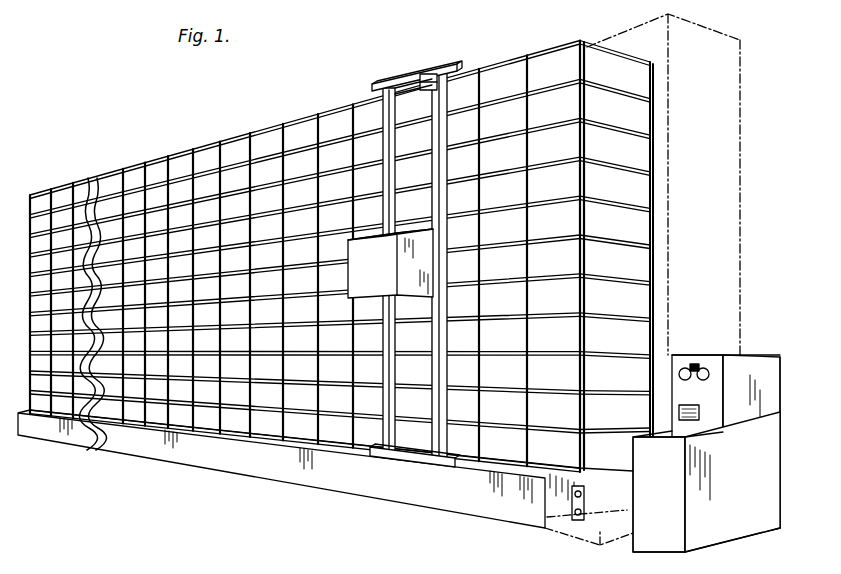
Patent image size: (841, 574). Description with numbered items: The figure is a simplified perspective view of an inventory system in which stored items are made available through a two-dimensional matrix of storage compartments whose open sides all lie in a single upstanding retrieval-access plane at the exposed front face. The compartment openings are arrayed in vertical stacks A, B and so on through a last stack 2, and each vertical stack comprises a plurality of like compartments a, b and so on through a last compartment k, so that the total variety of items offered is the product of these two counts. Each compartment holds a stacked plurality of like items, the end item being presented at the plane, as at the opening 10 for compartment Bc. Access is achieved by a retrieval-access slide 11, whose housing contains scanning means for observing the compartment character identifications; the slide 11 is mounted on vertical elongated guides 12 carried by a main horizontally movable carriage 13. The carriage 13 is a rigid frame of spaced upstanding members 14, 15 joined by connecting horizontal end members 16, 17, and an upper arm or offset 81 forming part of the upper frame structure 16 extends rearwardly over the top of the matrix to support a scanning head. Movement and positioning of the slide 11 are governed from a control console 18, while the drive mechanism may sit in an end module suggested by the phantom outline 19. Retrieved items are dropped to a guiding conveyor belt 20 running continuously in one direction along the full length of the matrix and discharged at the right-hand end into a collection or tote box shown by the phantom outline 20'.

The rack end 2 is at (51, 189).
The opening 10 is at (502, 365).
The retrieval-access slide 11 is at (362, 268).
The vertical elongated guides 12 is at (430, 152).
The main horizontally movable carriage 13 is at (418, 262).
The upstanding member 14 is at (382, 203).
The upstanding member 15 is at (448, 195).
The upper horizontal end member 16 is at (452, 67).
The upper arm or offset 81 is at (428, 73).
The lower horizontal end member 17 is at (410, 452).
The control console 18 is at (758, 366).
The phantom outline of end module 19 is at (742, 131).
The guiding conveyor belt 20 is at (325, 469).
The collection or tote box 20' is at (593, 541).
The vertical stack A is at (561, 48).
The vertical stack B is at (516, 56).
The compartment k is at (577, 62).
The compartment a is at (566, 452).
The compartment b is at (566, 411).
The compartment c is at (566, 369).